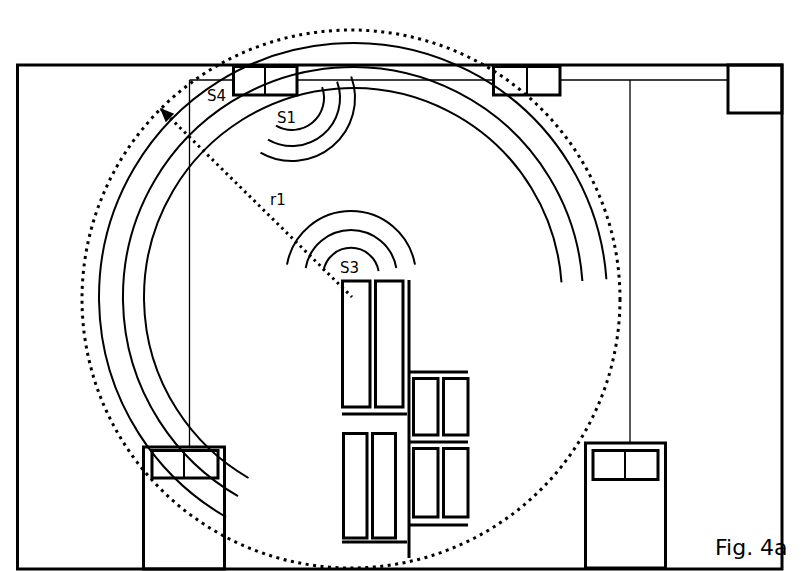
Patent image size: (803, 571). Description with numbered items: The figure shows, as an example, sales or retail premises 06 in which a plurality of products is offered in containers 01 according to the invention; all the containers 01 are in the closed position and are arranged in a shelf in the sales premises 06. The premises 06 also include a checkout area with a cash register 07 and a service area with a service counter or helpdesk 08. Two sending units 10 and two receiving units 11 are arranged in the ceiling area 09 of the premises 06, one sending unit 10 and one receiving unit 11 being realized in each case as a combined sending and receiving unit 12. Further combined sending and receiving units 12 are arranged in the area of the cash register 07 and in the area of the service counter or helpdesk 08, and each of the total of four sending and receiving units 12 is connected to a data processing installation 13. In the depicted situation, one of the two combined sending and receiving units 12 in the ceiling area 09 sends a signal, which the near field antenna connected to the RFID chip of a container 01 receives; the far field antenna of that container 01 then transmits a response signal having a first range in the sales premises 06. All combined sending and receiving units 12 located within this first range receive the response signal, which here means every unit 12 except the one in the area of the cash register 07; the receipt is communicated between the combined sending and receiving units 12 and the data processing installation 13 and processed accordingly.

The container 01 is at (365, 354).
The sales premises 06 is at (55, 100).
The cash register 07 is at (637, 530).
The service counter or helpdesk 08 is at (195, 546).
The ceiling area 09 is at (652, 66).
The sending unit 10 is at (258, 92).
The receiving unit 11 is at (290, 92).
The combined sending and receiving unit 12 is at (562, 100).
The data processing installation 13 is at (765, 98).